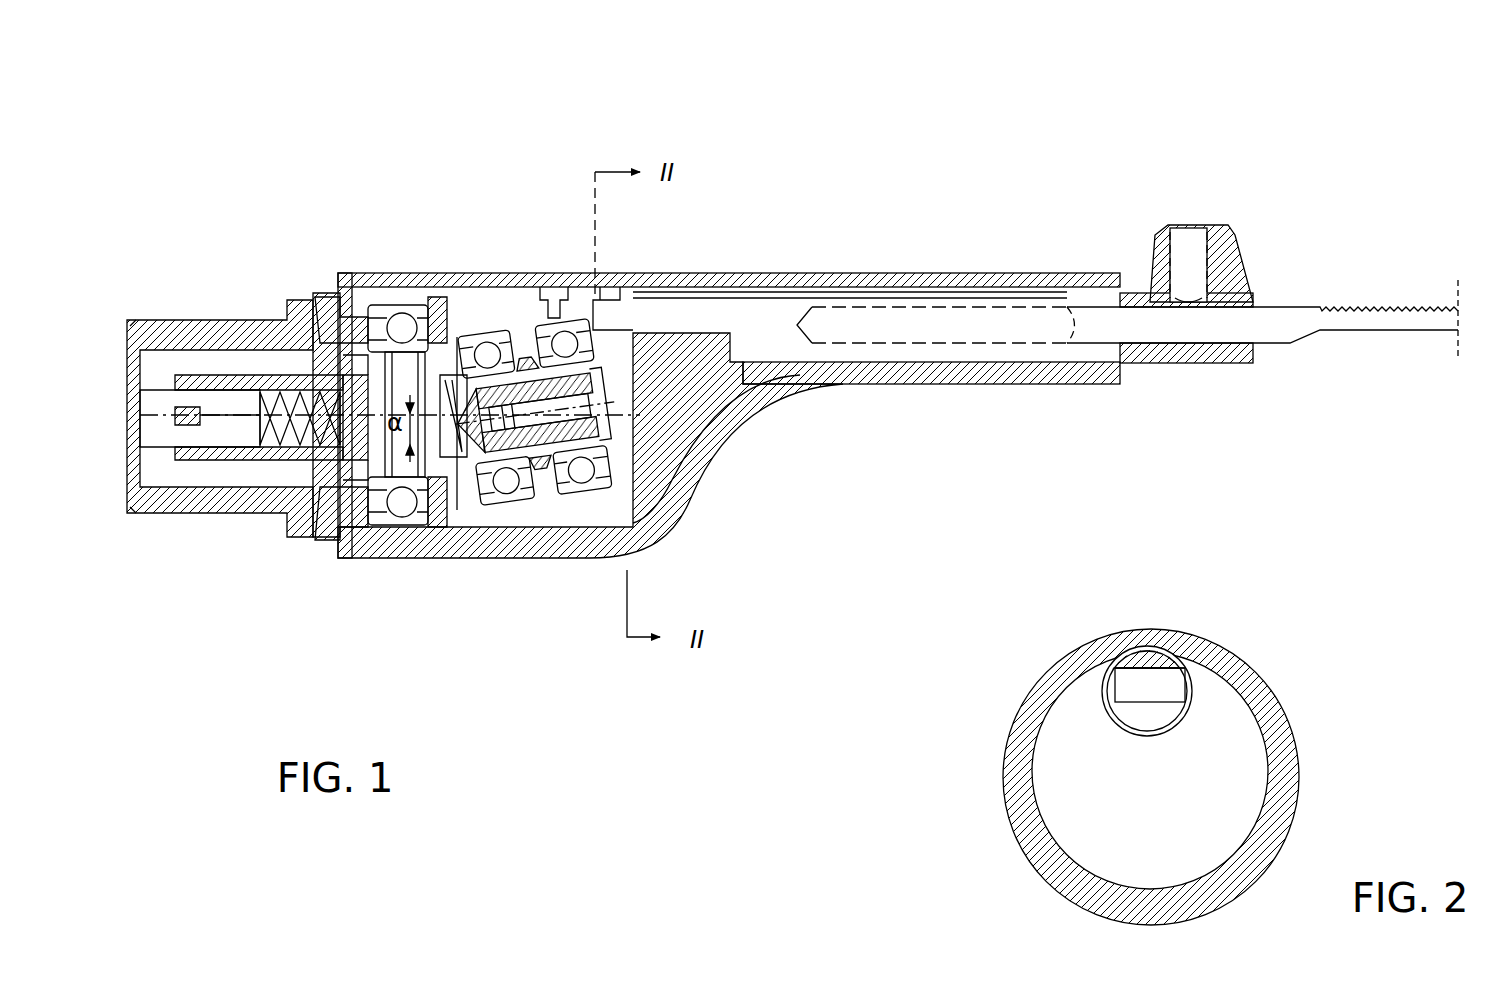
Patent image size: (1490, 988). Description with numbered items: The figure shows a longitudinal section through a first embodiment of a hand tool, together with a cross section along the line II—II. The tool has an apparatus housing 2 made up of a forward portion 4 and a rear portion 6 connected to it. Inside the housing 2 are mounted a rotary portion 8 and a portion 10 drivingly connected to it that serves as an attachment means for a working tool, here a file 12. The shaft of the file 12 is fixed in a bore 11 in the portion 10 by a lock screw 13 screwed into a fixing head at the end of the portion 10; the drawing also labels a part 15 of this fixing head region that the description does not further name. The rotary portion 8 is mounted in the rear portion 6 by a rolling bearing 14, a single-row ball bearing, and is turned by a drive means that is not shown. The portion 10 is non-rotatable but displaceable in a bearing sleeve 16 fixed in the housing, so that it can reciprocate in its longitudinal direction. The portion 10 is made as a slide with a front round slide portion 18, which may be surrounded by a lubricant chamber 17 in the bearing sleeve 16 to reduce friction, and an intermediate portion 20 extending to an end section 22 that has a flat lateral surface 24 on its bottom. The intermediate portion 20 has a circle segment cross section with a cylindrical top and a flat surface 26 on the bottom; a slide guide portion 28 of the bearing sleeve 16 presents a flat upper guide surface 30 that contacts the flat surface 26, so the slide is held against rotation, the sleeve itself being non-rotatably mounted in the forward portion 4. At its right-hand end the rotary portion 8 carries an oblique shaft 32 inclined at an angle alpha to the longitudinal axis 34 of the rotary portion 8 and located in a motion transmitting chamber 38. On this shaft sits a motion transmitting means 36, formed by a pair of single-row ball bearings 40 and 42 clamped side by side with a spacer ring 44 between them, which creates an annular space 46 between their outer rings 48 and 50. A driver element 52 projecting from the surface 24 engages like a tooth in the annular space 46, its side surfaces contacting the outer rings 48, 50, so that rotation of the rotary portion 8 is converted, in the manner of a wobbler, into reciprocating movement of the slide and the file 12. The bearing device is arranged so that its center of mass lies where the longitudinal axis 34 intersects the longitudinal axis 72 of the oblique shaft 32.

In FIG. 1, the apparatus housing 2 is at (662, 270).
In FIG. 1, the forward portion 4 is at (783, 390).
In FIG. 2, the forward portion 4 is at (1282, 770).
In FIG. 1, the rear portion 6 is at (249, 333).
In FIG. 1, the rotary portion 8 is at (237, 460).
In FIG. 1, the portion 10 is at (725, 290).
In FIG. 1, the bore 11 is at (1040, 318).
In FIG. 1, the file 12 is at (1379, 306).
In FIG. 1, the lock screw 13 is at (1190, 228).
In FIG. 1, the rolling bearing 14 is at (367, 502).
In FIG. 1, the clamping nut 15 is at (1240, 285).
In FIG. 1, the bearing sleeve 16 is at (838, 288).
In FIG. 1, the chamber 17 is at (907, 295).
In FIG. 1, the front round slide portion 18 is at (930, 327).
In FIG. 1, the intermediate portion 20 is at (732, 272).
In FIG. 2, the intermediate portion 20 is at (1170, 683).
In FIG. 1, the end section 22 is at (560, 320).
In FIG. 2, the end section 22 is at (1150, 652).
In FIG. 1, the flat lateral surface 24 is at (540, 330).
In FIG. 1, the flat surface 26 is at (615, 328).
In FIG. 2, the flat surface 26 is at (1130, 700).
In FIG. 1, the slide guide portion 28 is at (780, 400).
In FIG. 2, the slide guide portion 28 is at (1157, 715).
In FIG. 1, the flat upper guide surface 30 is at (718, 335).
In FIG. 2, the flat upper guide surface 30 is at (1186, 688).
In FIG. 1, the oblique shaft 32 is at (607, 397).
In FIG. 1, the longitudinal axis 34 is at (217, 417).
In FIG. 1, the motion transmitting means 36 is at (490, 330).
In FIG. 1, the motion transmitting chamber 38 is at (587, 562).
In FIG. 2, the motion transmitting chamber 38 is at (1175, 841).
In FIG. 1, the ball bearing 40 is at (500, 517).
In FIG. 1, the ball bearing 42 is at (605, 508).
In FIG. 1, the spacer ring 44 is at (547, 502).
In FIG. 1, the annular space 46 is at (469, 313).
In FIG. 1, the outer ring 48 is at (455, 335).
In FIG. 1, the outer ring 50 is at (570, 320).
In FIG. 1, the driver element 52 is at (530, 335).
In FIG. 1, the longitudinal axis 72 is at (708, 355).